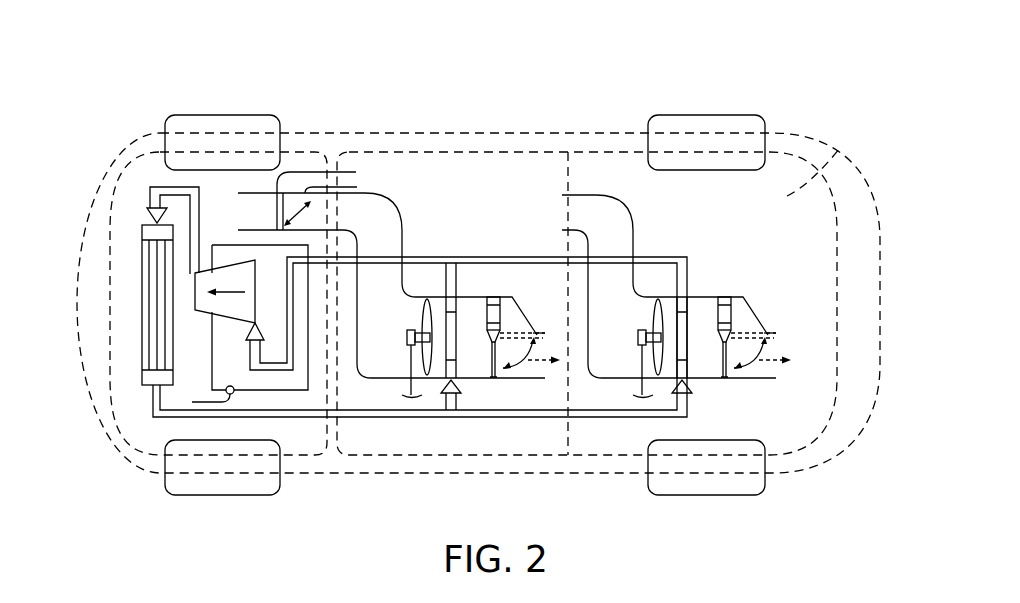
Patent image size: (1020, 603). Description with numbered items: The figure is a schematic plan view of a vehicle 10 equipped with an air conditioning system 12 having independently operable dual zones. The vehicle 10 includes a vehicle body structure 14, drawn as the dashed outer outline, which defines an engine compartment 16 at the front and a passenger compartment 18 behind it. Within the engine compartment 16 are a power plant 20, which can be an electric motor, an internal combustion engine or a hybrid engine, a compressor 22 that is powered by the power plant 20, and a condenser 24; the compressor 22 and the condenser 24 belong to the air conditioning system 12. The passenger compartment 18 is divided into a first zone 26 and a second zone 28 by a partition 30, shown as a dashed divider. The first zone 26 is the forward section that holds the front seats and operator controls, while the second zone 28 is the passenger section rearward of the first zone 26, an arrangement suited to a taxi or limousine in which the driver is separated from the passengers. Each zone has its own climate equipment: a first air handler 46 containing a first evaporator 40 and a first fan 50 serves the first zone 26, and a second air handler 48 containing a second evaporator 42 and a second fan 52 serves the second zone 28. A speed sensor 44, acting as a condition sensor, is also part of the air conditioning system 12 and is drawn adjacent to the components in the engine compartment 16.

The vehicle 10 is at (311, 77).
The air conditioning system 12 is at (517, 245).
The vehicle body structure 14 is at (612, 125).
The engine compartment 16 is at (158, 172).
The passenger compartment 18 is at (527, 132).
The power plant 20 is at (291, 383).
The compressor 22 is at (232, 276).
The condenser 24 is at (162, 333).
The first zone 26 is at (461, 193).
The second zone 28 is at (821, 150).
The partition 30 is at (572, 172).
The first evaporator 40 is at (452, 327).
The second evaporator 42 is at (683, 327).
The speed sensor 44 is at (231, 386).
The first air handler 46 is at (402, 228).
The second air handler 48 is at (633, 226).
The first fan 50 is at (407, 333).
The second fan 52 is at (638, 335).